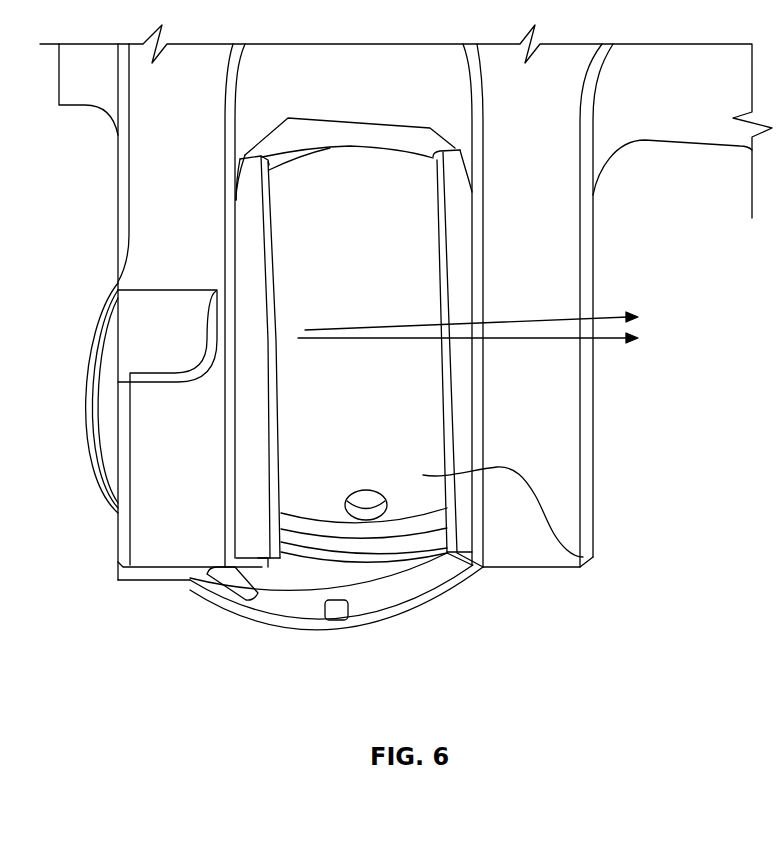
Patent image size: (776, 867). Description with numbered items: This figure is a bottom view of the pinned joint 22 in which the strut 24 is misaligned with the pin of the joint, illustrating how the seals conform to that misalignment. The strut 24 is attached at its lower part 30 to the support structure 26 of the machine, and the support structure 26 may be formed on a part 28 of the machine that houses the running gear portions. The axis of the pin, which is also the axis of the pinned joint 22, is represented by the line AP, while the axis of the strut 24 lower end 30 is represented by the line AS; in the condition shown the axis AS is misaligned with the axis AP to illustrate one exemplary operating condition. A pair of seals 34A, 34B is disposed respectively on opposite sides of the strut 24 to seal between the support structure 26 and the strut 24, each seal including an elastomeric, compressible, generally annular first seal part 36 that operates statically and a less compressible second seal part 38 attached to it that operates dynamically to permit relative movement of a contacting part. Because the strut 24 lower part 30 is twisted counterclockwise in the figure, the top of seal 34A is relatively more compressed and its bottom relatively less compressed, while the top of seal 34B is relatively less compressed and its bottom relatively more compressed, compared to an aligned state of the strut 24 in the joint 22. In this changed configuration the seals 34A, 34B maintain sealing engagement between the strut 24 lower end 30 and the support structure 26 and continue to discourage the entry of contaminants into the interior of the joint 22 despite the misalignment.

The pinned joint 22 is at (580, 596).
The strut 24 is at (432, 603).
The support structure 26 is at (568, 480).
The part 28 is at (683, 118).
The lower part 30 is at (593, 557).
The seal 34A is at (254, 153).
The seal 34B is at (456, 151).
The first seal part 36 is at (253, 548).
The second seal part 38 is at (283, 473).
The axis of the strut lower end AS is at (617, 314).
The axis of the pin AP is at (605, 342).